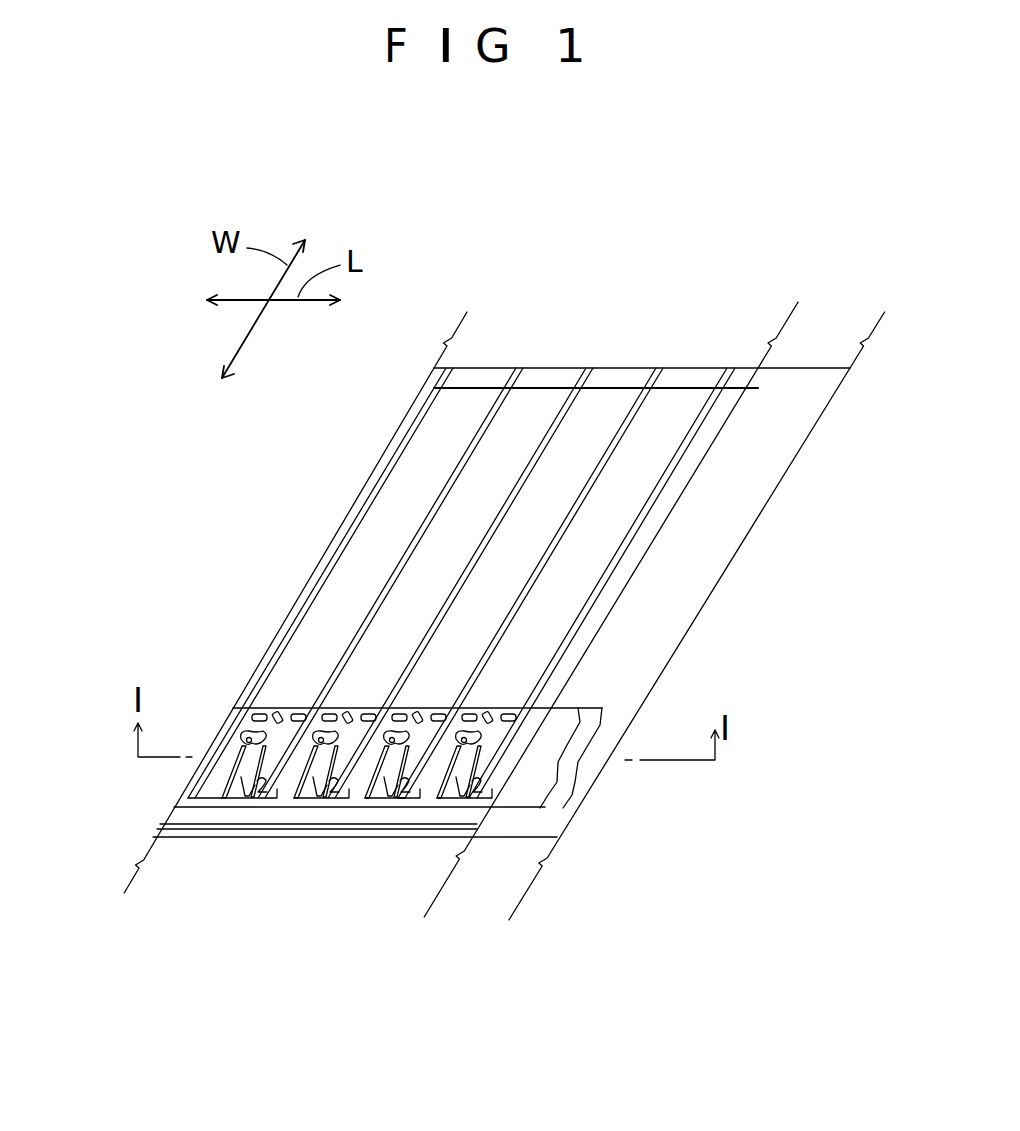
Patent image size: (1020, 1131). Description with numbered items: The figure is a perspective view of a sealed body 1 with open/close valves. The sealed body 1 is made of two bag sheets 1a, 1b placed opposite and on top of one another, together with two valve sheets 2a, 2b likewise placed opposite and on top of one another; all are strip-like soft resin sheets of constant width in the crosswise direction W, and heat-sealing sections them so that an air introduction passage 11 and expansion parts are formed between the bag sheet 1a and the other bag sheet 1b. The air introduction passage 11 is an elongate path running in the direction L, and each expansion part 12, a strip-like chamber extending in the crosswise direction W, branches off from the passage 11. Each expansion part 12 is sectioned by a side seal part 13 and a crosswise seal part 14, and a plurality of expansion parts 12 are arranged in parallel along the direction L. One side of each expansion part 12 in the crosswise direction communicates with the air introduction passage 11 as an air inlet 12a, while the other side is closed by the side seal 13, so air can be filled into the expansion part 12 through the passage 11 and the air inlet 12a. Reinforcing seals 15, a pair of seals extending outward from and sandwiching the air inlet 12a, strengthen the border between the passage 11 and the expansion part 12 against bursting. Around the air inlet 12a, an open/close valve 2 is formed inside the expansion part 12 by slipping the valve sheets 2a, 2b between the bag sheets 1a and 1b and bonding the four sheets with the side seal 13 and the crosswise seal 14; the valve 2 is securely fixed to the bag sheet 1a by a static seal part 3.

The sealed body 1 is at (345, 470).
The bag sheet 1a is at (683, 572).
The bag sheet 1b is at (582, 590).
The open/close valve 2 is at (237, 752).
The valve sheet 2a is at (558, 775).
The valve sheet 2b is at (552, 732).
The static seal part 3 is at (255, 727).
The air introduction passage 11 is at (312, 815).
The expansion part 12 is at (370, 563).
The air inlet 12a is at (233, 802).
The side seal part 13 is at (538, 382).
The crosswise seal part 14 is at (557, 427).
The reinforcing seal 15 is at (395, 810).